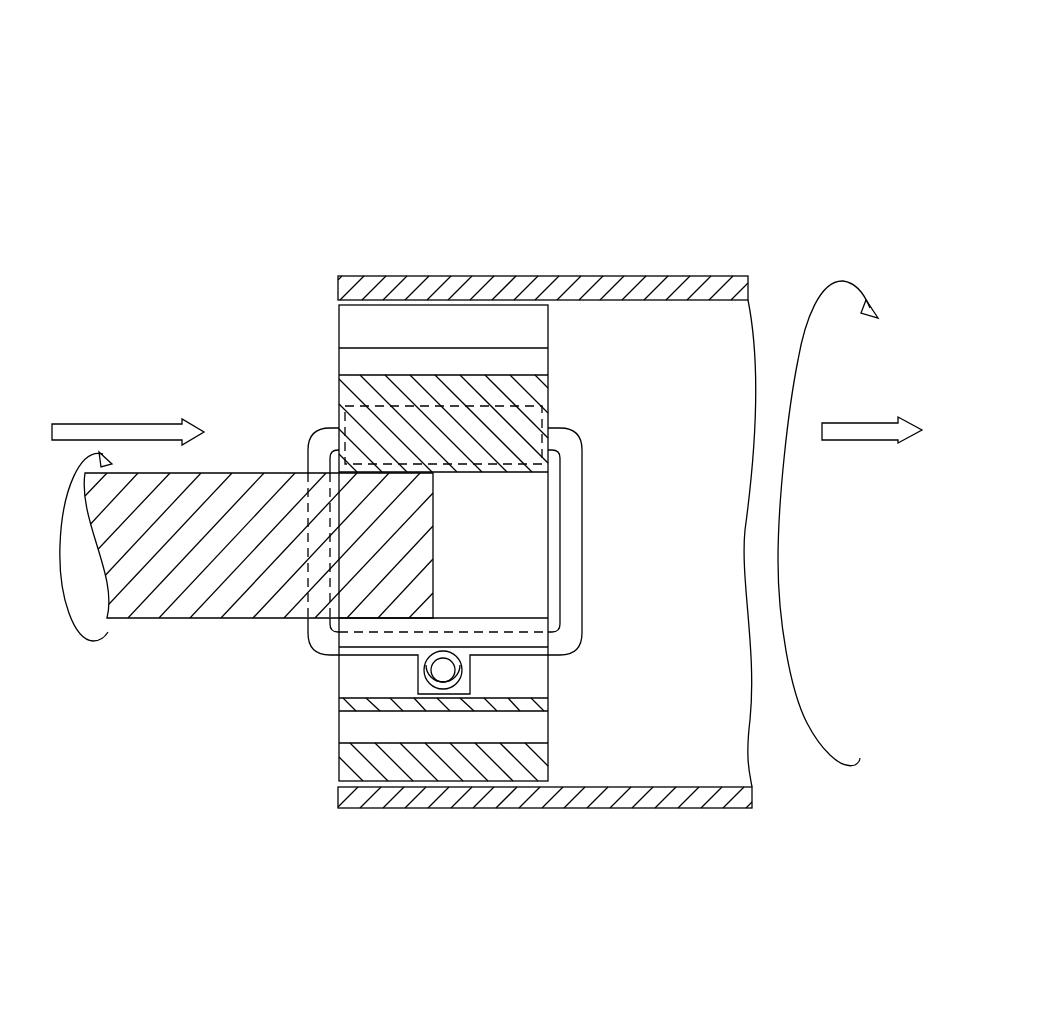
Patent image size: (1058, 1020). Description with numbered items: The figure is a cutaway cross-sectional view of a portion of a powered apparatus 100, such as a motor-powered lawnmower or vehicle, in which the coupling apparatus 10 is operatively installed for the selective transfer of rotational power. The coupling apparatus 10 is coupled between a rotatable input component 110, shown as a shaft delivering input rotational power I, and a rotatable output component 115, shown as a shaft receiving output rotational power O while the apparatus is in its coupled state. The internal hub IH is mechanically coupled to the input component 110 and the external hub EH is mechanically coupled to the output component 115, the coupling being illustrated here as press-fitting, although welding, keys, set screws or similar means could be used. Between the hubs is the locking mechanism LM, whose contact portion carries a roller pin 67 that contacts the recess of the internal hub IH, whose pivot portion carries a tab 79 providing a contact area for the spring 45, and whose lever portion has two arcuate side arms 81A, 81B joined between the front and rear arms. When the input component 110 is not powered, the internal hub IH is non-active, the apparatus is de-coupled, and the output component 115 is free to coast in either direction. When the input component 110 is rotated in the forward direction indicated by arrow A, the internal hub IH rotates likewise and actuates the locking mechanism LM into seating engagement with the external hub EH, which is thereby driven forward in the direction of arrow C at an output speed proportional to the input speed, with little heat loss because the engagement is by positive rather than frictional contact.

The powered apparatus 100 is at (607, 182).
The coupling apparatus 10 is at (290, 338).
The output component 115 is at (720, 808).
The roller pin 67 is at (547, 388).
The tab 79 is at (468, 668).
The spring 45 is at (462, 675).
The side arm 81A is at (580, 457).
The side arm 81B is at (310, 433).
The input component 110 is at (150, 619).
The arrow A is at (70, 635).
The input rotational power I is at (138, 422).
The output rotational power O is at (857, 423).
The arrow C is at (823, 292).
The locking mechanism LM is at (298, 648).
The internal hub IH is at (320, 688).
The external hub EH is at (327, 760).